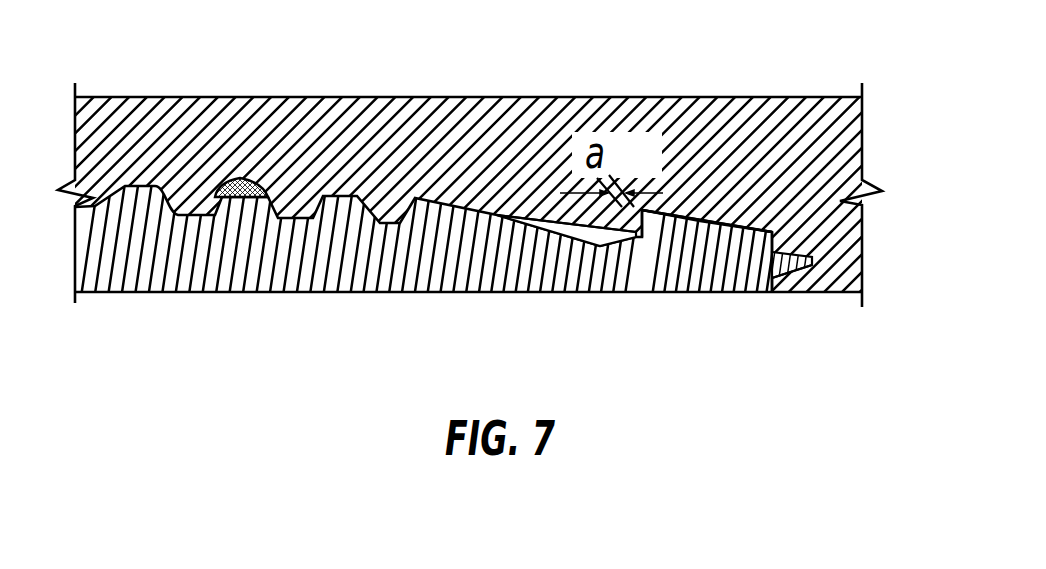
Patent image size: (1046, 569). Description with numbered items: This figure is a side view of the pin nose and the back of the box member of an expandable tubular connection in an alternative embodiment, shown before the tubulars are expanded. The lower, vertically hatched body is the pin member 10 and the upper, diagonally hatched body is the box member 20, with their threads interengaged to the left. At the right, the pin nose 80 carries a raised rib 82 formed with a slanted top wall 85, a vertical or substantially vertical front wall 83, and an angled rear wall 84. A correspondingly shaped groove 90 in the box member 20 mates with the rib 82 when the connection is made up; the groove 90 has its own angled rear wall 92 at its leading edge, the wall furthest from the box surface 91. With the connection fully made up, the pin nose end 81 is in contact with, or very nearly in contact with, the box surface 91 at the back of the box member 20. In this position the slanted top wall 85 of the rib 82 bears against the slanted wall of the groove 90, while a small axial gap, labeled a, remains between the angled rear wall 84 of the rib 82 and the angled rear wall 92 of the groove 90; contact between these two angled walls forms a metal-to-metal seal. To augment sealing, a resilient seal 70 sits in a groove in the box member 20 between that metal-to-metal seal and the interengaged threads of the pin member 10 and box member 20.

The pin member 10 is at (307, 265).
The box member 20 is at (332, 100).
The resilient seal 70 is at (235, 180).
The pin nose 80 is at (745, 260).
The pin nose end 81 is at (790, 276).
The rib 82 is at (736, 233).
The vertical front wall 83 is at (770, 230).
The angled rear wall 84 is at (640, 233).
The slanted top wall 85 is at (688, 236).
The groove 90 is at (712, 224).
The box surface 91 is at (815, 260).
The angled rear wall 92 is at (582, 208).